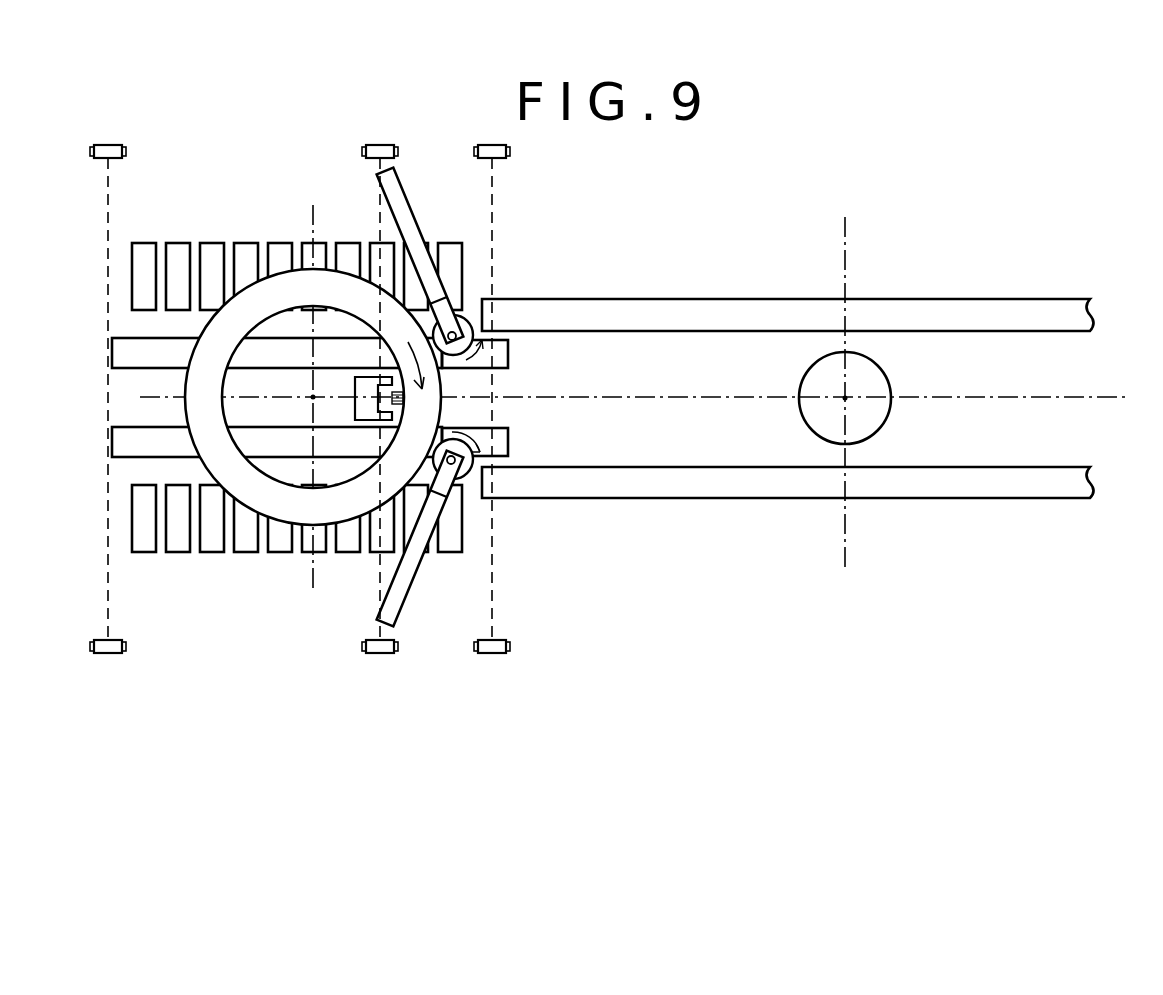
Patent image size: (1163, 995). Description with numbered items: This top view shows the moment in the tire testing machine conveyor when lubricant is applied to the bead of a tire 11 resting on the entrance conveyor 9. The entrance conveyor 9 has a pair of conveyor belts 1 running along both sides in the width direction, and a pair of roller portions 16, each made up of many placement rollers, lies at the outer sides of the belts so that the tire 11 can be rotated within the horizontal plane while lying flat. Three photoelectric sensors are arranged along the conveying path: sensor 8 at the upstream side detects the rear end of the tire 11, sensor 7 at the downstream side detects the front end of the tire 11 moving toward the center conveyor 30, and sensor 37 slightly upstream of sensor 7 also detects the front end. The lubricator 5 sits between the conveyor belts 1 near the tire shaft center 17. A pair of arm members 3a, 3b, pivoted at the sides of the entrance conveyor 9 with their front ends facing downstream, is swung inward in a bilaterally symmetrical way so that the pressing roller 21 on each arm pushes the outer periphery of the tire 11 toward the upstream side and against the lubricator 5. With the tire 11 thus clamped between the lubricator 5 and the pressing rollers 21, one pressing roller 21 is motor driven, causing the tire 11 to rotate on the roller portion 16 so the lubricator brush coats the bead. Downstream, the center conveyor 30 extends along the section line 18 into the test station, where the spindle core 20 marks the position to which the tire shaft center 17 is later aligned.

The conveyor belts 1 is at (283, 397).
The tire 11 is at (197, 382).
The roller portion 16 is at (470, 243).
The tire shaft center 17 is at (311, 399).
The lubricator 5 is at (356, 388).
The pressing roller 21 is at (465, 320).
The arm member 3a is at (398, 592).
The arm member 3b is at (402, 203).
The photoelectric sensor 8 is at (104, 654).
The photoelectric sensor 37 is at (382, 654).
The photoelectric sensor 7 is at (492, 654).
The entrance conveyor 9 is at (490, 720).
The line of reference numeral 18 is at (1085, 398).
The spindle core 20 is at (845, 398).
The center conveyor 30 is at (804, 514).